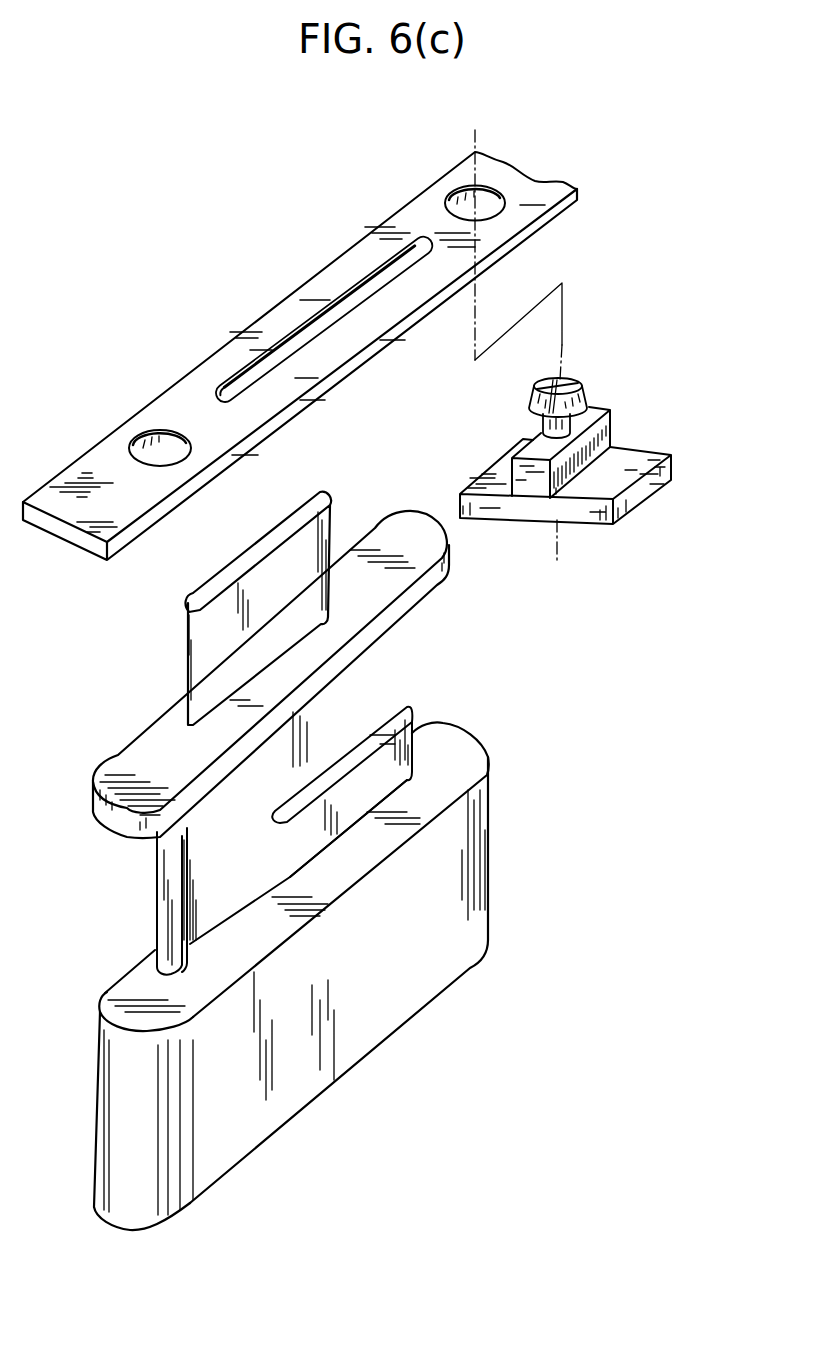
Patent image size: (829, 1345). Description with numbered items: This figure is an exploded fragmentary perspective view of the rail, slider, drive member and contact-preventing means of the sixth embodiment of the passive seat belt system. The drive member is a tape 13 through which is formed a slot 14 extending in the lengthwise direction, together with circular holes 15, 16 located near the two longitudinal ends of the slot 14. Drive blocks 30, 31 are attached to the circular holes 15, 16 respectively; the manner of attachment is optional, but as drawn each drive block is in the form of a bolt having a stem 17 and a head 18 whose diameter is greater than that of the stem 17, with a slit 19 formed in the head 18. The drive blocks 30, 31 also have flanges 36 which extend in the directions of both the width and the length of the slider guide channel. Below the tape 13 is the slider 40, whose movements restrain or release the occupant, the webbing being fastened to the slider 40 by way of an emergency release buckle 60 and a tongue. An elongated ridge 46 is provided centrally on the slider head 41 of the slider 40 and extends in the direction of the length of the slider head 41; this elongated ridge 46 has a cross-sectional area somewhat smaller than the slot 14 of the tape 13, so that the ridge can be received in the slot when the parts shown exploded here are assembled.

The tape 13 is at (505, 221).
The slot 14 is at (303, 338).
The circular hole 15 is at (165, 453).
The circular hole 16 is at (457, 194).
The stem 17 is at (542, 427).
The head 18 is at (559, 371).
The slit 19 is at (562, 382).
The drive block 30 is at (603, 464).
The drive block 31 is at (642, 455).
The flange 36 is at (630, 497).
The slider 40 is at (200, 903).
The slider head 41 is at (135, 745).
The elongated ridge 46 is at (188, 656).
The emergency release buckle 60 is at (470, 832).